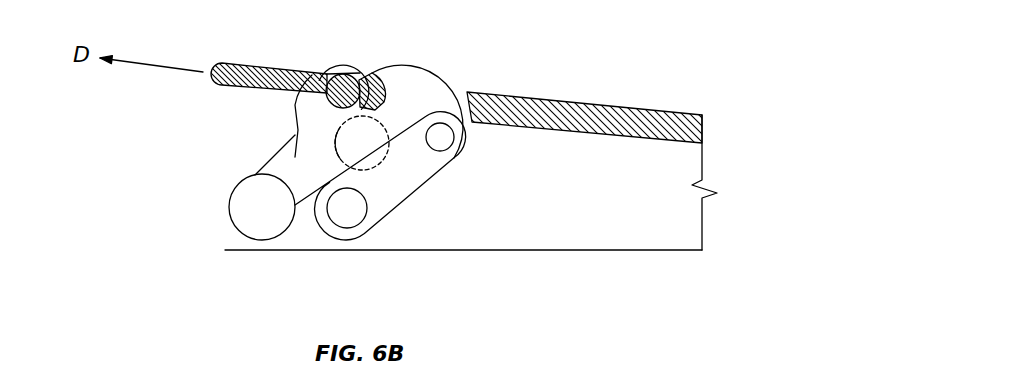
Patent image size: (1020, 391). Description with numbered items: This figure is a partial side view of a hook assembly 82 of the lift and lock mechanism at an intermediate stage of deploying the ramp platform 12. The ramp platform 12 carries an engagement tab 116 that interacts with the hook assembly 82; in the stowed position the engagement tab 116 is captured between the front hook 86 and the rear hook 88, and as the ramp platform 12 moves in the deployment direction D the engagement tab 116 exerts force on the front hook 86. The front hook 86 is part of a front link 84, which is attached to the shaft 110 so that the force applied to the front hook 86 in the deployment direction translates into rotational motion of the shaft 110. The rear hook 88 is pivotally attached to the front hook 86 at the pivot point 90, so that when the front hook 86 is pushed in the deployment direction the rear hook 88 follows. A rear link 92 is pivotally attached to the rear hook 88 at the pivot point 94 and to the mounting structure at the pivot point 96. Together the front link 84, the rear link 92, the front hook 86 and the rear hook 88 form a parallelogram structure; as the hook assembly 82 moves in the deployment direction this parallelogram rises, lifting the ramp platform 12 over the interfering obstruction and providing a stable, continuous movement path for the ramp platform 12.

The ramp platform 12 is at (568, 103).
The hook assembly 82 is at (272, 148).
The front link 84 is at (293, 136).
The front hook 86 is at (312, 75).
The rear hook 88 is at (413, 64).
The pivot point 90 is at (384, 127).
The rear link 92 is at (420, 175).
The pivot point 94 is at (438, 137).
The pivot point 96 is at (349, 213).
The shaft 110 is at (242, 218).
The engagement tab 116 is at (343, 73).